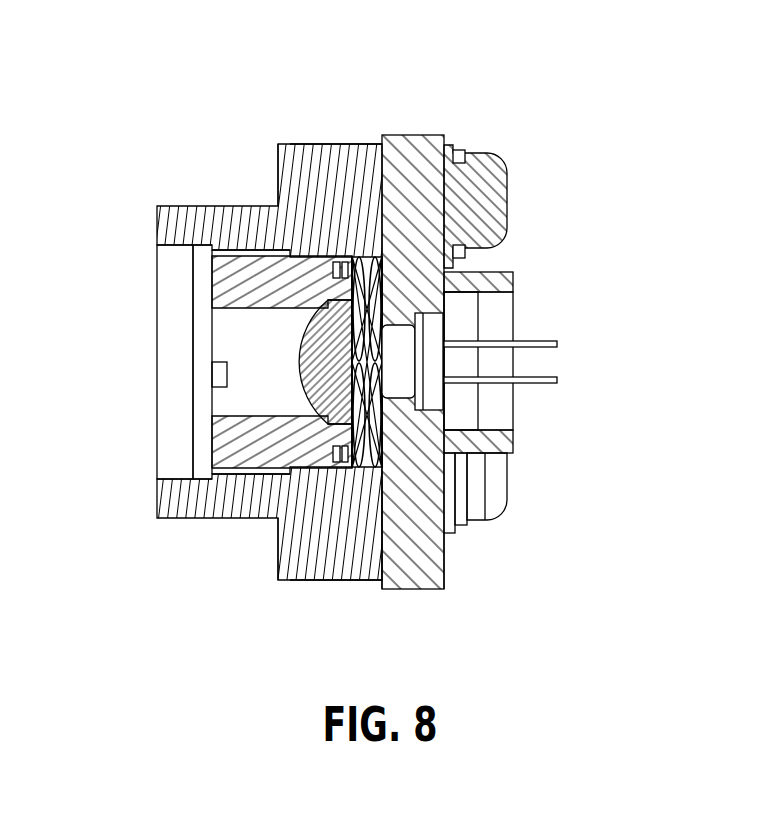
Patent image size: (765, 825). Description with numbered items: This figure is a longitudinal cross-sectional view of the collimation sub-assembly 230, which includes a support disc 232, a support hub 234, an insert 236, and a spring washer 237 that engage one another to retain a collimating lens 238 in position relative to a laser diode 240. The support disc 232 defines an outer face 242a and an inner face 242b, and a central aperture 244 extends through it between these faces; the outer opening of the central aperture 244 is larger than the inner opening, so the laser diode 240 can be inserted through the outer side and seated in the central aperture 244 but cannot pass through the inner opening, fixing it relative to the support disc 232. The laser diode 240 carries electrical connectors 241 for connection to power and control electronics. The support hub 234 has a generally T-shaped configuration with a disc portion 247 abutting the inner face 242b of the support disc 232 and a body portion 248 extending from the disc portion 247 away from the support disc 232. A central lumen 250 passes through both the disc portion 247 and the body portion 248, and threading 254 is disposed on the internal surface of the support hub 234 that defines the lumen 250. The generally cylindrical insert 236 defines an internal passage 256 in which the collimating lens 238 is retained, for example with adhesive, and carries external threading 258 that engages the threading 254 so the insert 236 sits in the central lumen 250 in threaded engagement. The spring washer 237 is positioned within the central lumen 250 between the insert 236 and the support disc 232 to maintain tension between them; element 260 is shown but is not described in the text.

The collimation sub-assembly 230 is at (325, 97).
The support disc 232 is at (413, 153).
The support hub 234 is at (297, 142).
The insert 236 is at (227, 445).
The spring washer 237 is at (382, 305).
The collimating lens 238 is at (310, 348).
The laser diode 240 is at (425, 368).
The electrical connectors 241 is at (557, 380).
The outer face 242a is at (446, 562).
The inner face 242b is at (380, 545).
The central aperture 244 is at (505, 318).
The disc portion 247 is at (337, 157).
The body portion 248 is at (200, 205).
The central lumen 250 is at (178, 300).
The threading 254 is at (235, 475).
The internal passage 256 is at (217, 402).
The threading 258 is at (242, 472).
The connector 260 is at (492, 192).